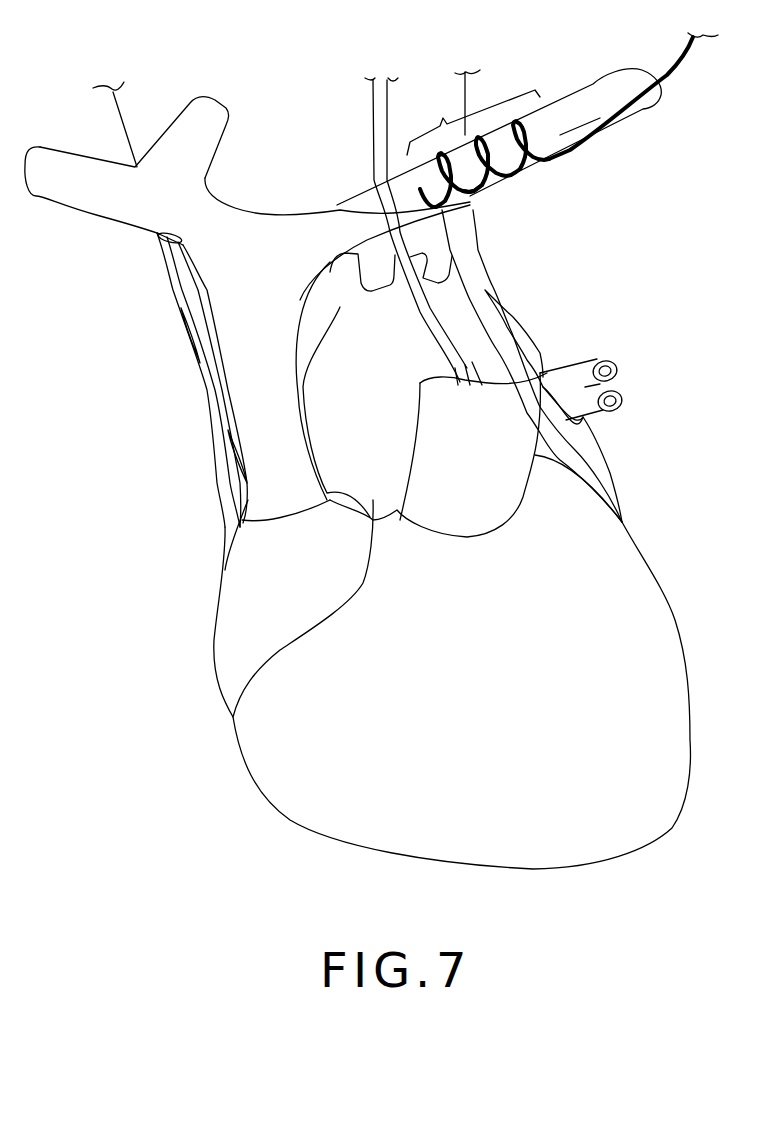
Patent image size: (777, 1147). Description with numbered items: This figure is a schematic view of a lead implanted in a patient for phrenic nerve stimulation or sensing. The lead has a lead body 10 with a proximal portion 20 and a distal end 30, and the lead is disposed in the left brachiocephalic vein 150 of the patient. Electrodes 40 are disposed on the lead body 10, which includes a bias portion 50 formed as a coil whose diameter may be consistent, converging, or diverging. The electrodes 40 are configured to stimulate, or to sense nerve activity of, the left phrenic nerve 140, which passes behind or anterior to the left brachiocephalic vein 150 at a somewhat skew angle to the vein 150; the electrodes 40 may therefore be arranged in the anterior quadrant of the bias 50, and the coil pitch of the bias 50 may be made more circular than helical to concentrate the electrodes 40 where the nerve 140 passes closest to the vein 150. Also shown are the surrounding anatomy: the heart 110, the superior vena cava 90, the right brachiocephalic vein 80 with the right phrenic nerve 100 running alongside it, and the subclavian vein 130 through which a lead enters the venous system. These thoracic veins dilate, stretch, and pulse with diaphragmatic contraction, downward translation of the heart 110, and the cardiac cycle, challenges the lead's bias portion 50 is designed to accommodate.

The lead body 10 is at (612, 120).
The proximal portion 20 is at (688, 63).
The distal end 30 is at (347, 211).
The electrodes 40 is at (520, 187).
The bias portion 50 is at (478, 148).
The right brachiocephalic vein 80 is at (217, 278).
The superior vena cava 90 is at (253, 397).
The right phrenic nerve 100 is at (123, 118).
The heart 110 is at (500, 717).
The subclavian vein 130 is at (108, 187).
The left phrenic nerve 140 is at (467, 100).
The left brachiocephalic vein 150 is at (567, 127).